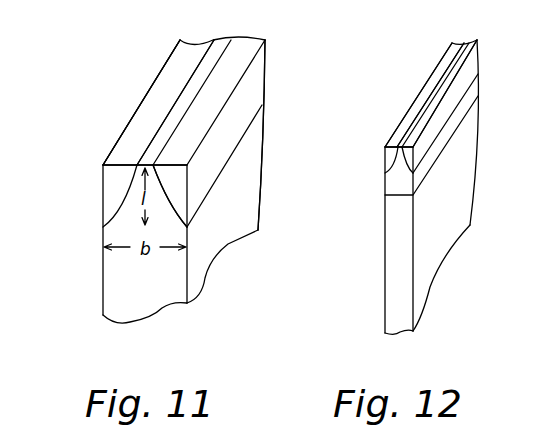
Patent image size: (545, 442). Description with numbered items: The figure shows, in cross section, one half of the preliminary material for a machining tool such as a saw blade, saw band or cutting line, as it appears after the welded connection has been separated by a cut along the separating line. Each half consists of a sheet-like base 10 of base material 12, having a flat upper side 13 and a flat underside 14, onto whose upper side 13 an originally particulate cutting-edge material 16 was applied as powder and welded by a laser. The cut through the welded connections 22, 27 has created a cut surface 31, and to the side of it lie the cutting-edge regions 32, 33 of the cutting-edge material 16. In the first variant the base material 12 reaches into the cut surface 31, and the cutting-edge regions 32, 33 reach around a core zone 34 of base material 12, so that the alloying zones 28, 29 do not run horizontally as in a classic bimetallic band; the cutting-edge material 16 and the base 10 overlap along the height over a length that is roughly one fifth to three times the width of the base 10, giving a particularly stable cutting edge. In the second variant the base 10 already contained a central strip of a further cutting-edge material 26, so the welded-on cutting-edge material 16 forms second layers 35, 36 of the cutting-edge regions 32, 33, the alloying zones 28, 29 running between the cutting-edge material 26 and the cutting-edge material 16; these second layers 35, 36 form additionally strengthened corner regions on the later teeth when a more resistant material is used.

In FIG. 11, the sheet-like base 10 is at (180, 180).
In FIG. 12, the sheet-like base 10 is at (432, 179).
In FIG. 11, the base material 12 is at (155, 160).
In FIG. 12, the base material 12 is at (423, 183).
In FIG. 11, the upper side 13 is at (97, 131).
In FIG. 12, the upper side 13 is at (377, 121).
In FIG. 11, the underside 14 is at (252, 191).
In FIG. 12, the underside 14 is at (475, 192).
In FIG. 11, the particulate cutting-edge material 16 is at (172, 103).
In FIG. 12, the particulate cutting-edge material 16 is at (434, 95).
In FIG. 11, the welded connection 22 is at (125, 101).
In FIG. 12, the further cutting-edge material 26 is at (460, 43).
In FIG. 11, the welded connection 27 is at (243, 95).
In FIG. 11, the alloying zone 28 is at (115, 212).
In FIG. 12, the alloying zone 28 is at (425, 105).
In FIG. 11, the alloying zone 29 is at (157, 197).
In FIG. 12, the alloying zone 29 is at (428, 120).
In FIG. 11, the cut surface 31 is at (164, 102).
In FIG. 12, the cut surface 31 is at (417, 89).
In FIG. 11, the cutting-edge region 32 is at (110, 175).
In FIG. 12, the cutting-edge region 32 is at (372, 141).
In FIG. 11, the cutting-edge region 33 is at (263, 62).
In FIG. 12, the cutting-edge region 33 is at (453, 138).
In FIG. 11, the core zone 34 is at (150, 182).
In FIG. 12, the second layer 35 is at (428, 88).
In FIG. 12, the second layer 36 is at (478, 44).